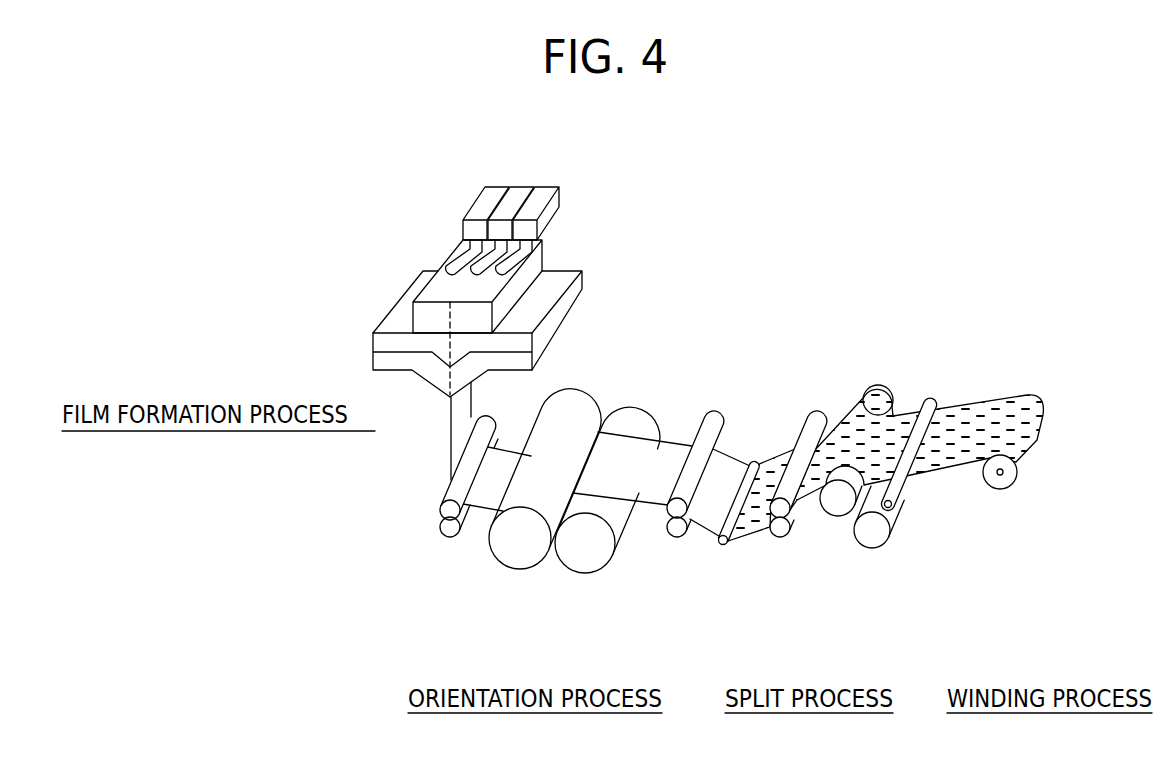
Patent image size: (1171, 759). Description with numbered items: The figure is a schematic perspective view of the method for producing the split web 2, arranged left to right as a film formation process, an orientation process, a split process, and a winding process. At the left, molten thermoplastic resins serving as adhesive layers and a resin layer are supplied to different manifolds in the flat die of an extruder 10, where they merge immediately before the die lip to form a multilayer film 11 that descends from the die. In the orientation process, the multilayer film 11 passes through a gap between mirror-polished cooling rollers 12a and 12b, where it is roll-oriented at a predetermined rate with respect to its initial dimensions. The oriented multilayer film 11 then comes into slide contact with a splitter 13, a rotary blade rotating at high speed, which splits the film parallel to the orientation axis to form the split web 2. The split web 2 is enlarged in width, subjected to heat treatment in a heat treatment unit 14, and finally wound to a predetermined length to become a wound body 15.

The split web 2 is at (980, 407).
The extruder 10 is at (402, 311).
The multilayer film 11 is at (451, 433).
The cooling roller 12a is at (508, 571).
The cooling roller 12b is at (600, 574).
The splitter 13 is at (754, 464).
The heat treatment unit 14 is at (870, 548).
The wound body 15 is at (988, 488).